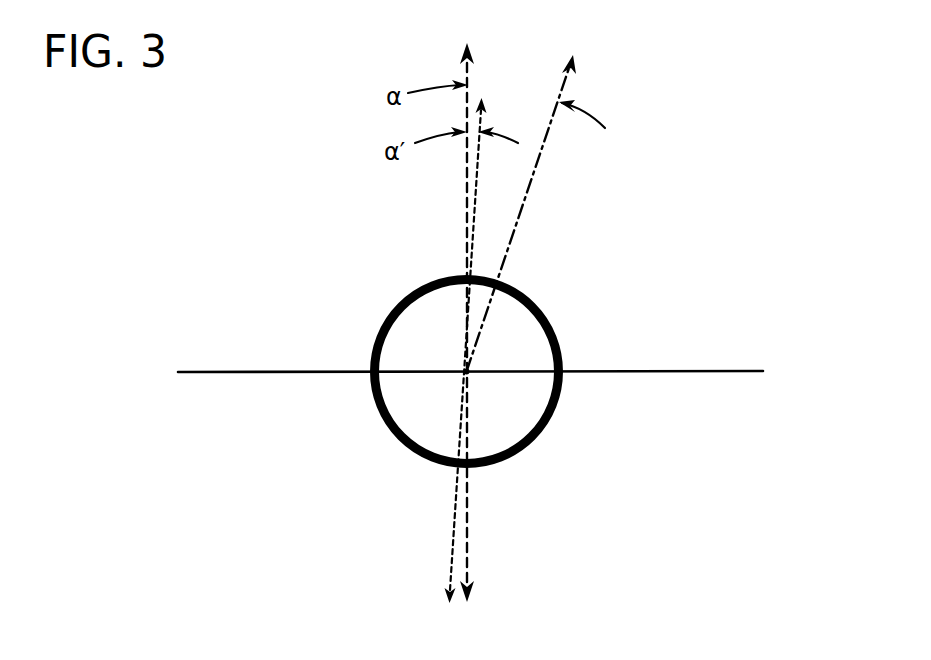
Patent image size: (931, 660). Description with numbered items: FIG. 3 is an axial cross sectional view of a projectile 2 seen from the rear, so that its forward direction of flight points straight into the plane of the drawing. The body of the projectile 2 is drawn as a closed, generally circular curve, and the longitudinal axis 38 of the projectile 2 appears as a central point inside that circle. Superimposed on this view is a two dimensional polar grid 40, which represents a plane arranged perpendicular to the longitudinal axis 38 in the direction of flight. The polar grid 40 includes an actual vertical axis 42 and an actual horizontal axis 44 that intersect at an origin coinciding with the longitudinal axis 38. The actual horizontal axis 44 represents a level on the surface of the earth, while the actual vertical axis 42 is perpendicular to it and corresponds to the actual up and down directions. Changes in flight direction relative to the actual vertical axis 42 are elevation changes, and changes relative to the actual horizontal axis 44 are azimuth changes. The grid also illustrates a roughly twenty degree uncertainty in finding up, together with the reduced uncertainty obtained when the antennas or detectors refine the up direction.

The projectile 2 is at (387, 422).
The longitudinal axis 38 is at (465, 372).
The two dimensional polar grid 40 is at (676, 251).
The actual vertical axis 42 is at (466, 522).
The actual horizontal axis 44 is at (678, 372).